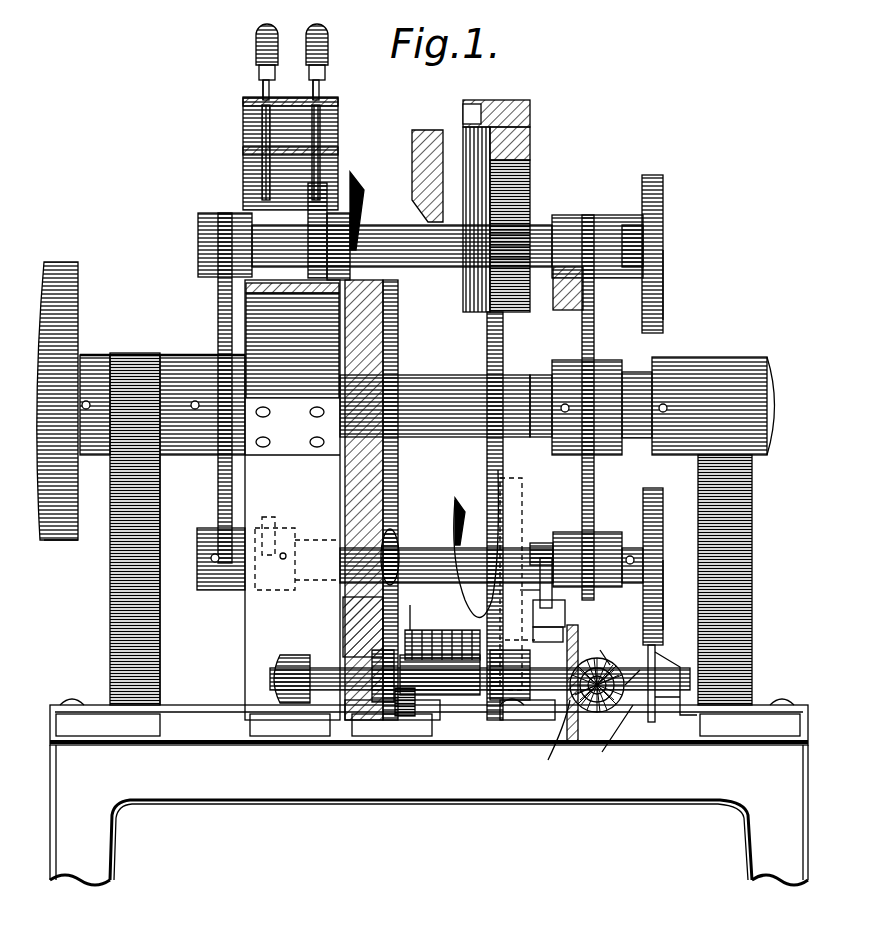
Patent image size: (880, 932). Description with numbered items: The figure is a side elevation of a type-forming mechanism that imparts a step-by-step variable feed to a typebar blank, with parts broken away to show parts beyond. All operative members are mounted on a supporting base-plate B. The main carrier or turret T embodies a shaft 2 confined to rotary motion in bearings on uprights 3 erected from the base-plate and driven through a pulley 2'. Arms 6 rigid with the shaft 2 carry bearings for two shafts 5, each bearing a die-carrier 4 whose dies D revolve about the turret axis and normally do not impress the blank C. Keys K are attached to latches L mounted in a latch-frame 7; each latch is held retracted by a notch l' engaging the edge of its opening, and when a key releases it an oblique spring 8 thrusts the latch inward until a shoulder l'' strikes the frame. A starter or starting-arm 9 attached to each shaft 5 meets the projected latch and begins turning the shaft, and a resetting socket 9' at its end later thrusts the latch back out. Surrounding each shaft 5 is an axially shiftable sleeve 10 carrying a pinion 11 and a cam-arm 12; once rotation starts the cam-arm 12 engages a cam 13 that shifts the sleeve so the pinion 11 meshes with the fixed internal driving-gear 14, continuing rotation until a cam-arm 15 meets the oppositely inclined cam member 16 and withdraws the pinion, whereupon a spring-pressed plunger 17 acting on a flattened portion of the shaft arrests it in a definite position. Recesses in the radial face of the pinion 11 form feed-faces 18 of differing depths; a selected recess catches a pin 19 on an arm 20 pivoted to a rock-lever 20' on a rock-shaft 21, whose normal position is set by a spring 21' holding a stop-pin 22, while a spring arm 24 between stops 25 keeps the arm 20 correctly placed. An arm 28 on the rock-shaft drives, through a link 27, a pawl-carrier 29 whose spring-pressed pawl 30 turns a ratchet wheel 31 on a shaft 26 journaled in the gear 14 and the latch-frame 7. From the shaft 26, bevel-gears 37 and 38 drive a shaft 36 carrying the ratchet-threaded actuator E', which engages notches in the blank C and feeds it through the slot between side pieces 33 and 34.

The base-plate B is at (429, 792).
The shaft 2 is at (406, 401).
The pulley 2' is at (61, 557).
The main carrier or turret T is at (162, 338).
The uprights 3 is at (162, 493).
The cam member 16 is at (321, 500).
The latch L is at (322, 90).
The key K is at (325, 30).
The shoulder l'' is at (239, 82).
The notch l' is at (344, 88).
The spring 8 is at (325, 135).
The starter or starting-arm 9 is at (308, 351).
The resetting socket 9' is at (275, 387).
The arms 6 is at (218, 328).
The sleeve 10 is at (447, 392).
The cam-arm 15 is at (368, 180).
The cam 13 is at (418, 200).
The actuator or cam-arm 12 is at (450, 305).
The fixed driving-gear 14 is at (532, 190).
The pinion 11 is at (530, 170).
The die-carrier 4 is at (660, 225).
The dies D is at (665, 300).
The shaft 5 is at (546, 265).
The spring-pressed plunger 17 is at (585, 290).
The arm 28 is at (401, 557).
The pin 19 is at (530, 562).
The feed-faces 18 is at (520, 570).
The arm 20 is at (565, 610).
The rock-lever 20' is at (567, 630).
The spring arm 24 is at (610, 655).
The stops 25 is at (517, 633).
The stop-pin 22 is at (597, 675).
The rock-shaft 21 is at (442, 636).
The spring 21' is at (426, 612).
The latch-frame 7 is at (476, 660).
The link 27 is at (343, 633).
The shaft 26 is at (370, 700).
The pawl-carrier 29 is at (390, 705).
The spring-pressed pawl 30 is at (415, 704).
The ratchet wheel 31 is at (405, 720).
The shaft 36 is at (582, 684).
The bevel-gear 37 is at (635, 675).
The bevel-gear 38 is at (559, 737).
The side piece 34 is at (614, 735).
The actuator E' is at (522, 690).
The side piece 33 is at (656, 660).
The blank C is at (676, 683).